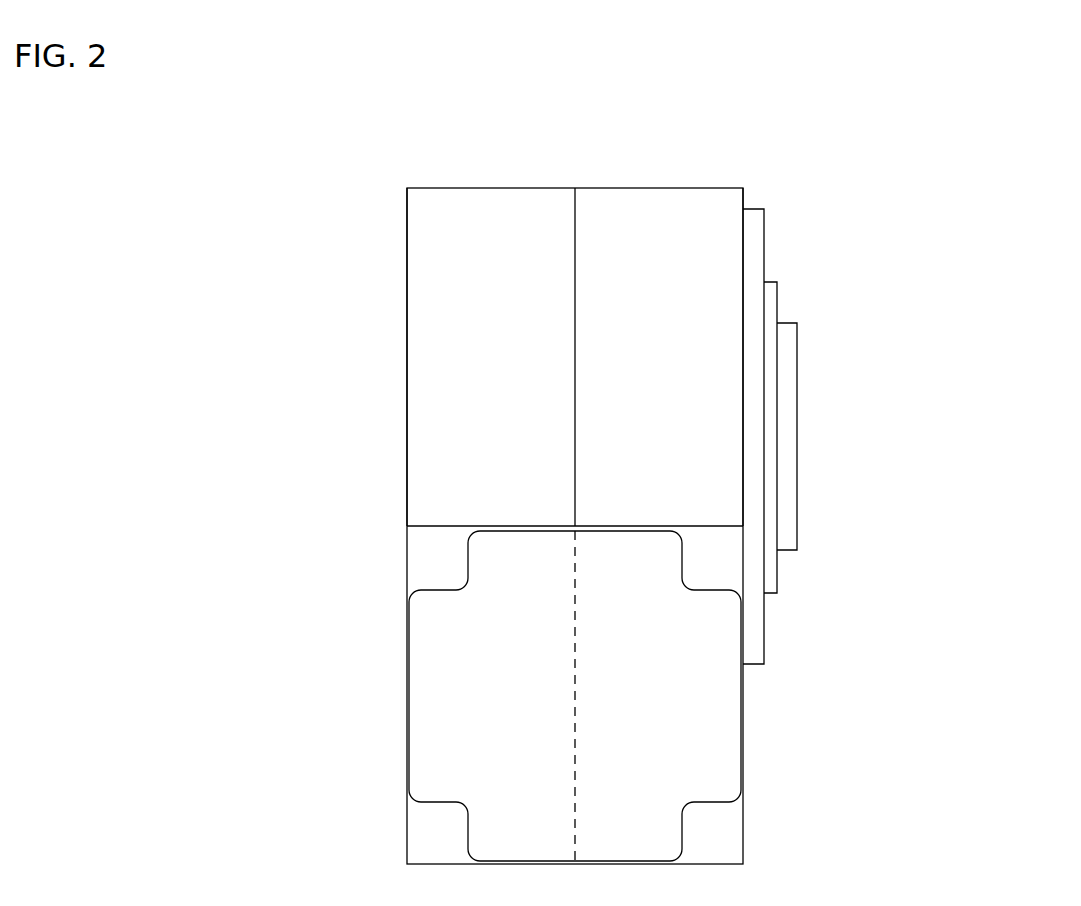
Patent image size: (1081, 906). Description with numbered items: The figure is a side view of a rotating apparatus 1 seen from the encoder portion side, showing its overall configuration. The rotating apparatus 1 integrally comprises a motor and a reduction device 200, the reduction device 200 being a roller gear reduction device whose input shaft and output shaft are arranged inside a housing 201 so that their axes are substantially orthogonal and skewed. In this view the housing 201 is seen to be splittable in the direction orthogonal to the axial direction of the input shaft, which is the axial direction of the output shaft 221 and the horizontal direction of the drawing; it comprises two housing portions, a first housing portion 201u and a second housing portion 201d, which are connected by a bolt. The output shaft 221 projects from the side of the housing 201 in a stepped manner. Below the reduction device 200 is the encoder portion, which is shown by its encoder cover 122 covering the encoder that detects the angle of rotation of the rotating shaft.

The rotating apparatus 1 is at (978, 117).
The reduction device 200 is at (785, 192).
The housing 201 is at (687, 83).
The second housing portion 201d is at (499, 187).
The first housing portion 201u is at (640, 187).
The output shaft 221 is at (797, 400).
The encoder cover 122 is at (720, 743).